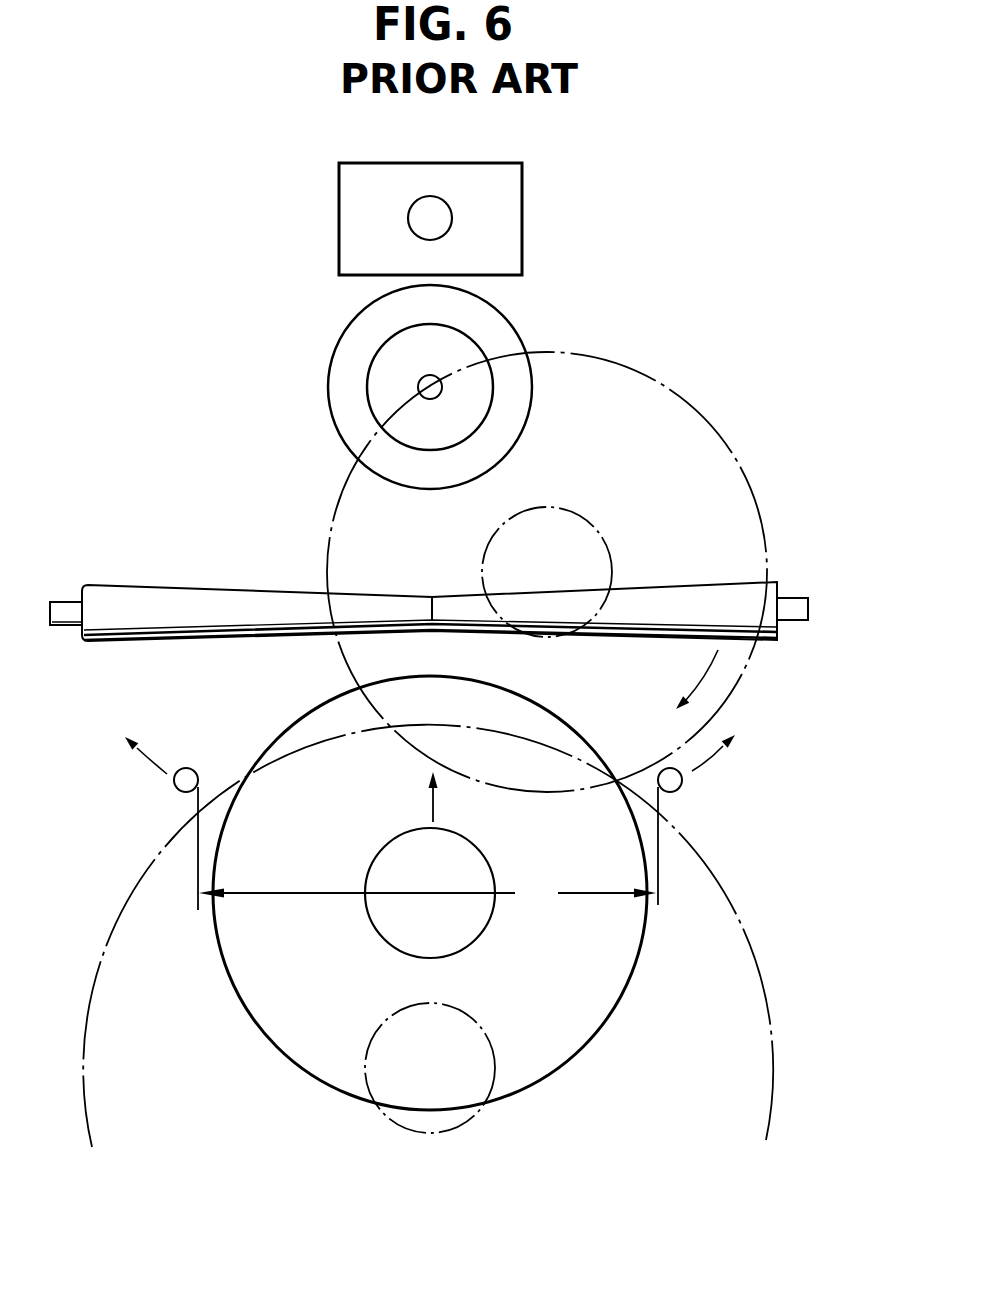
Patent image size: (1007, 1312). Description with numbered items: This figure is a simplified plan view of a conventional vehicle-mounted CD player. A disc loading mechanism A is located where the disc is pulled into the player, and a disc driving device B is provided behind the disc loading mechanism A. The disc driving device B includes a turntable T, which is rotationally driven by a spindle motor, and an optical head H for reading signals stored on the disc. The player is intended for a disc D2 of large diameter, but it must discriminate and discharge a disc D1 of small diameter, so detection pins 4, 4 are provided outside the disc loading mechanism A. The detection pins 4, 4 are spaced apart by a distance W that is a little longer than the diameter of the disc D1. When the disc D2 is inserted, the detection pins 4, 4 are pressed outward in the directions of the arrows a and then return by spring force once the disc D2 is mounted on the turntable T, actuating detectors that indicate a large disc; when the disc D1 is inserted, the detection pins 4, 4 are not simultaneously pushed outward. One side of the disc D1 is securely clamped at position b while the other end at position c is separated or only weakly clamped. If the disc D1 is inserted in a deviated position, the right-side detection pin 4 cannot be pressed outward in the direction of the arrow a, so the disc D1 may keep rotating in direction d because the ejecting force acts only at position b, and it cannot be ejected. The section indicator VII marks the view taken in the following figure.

The optical head H is at (505, 226).
The disc driving device B is at (509, 326).
The turntable T is at (508, 338).
The disc of a small diameter D1 is at (713, 430).
The disc of a large diameter D2 is at (765, 992).
The disc loading mechanism A is at (425, 618).
The position b is at (791, 580).
The position c is at (296, 580).
The direction d is at (689, 679).
The arrows a is at (430, 758).
The detection pins 4 is at (183, 790).
The distance W is at (427, 894).
The section line VII is at (412, 798).